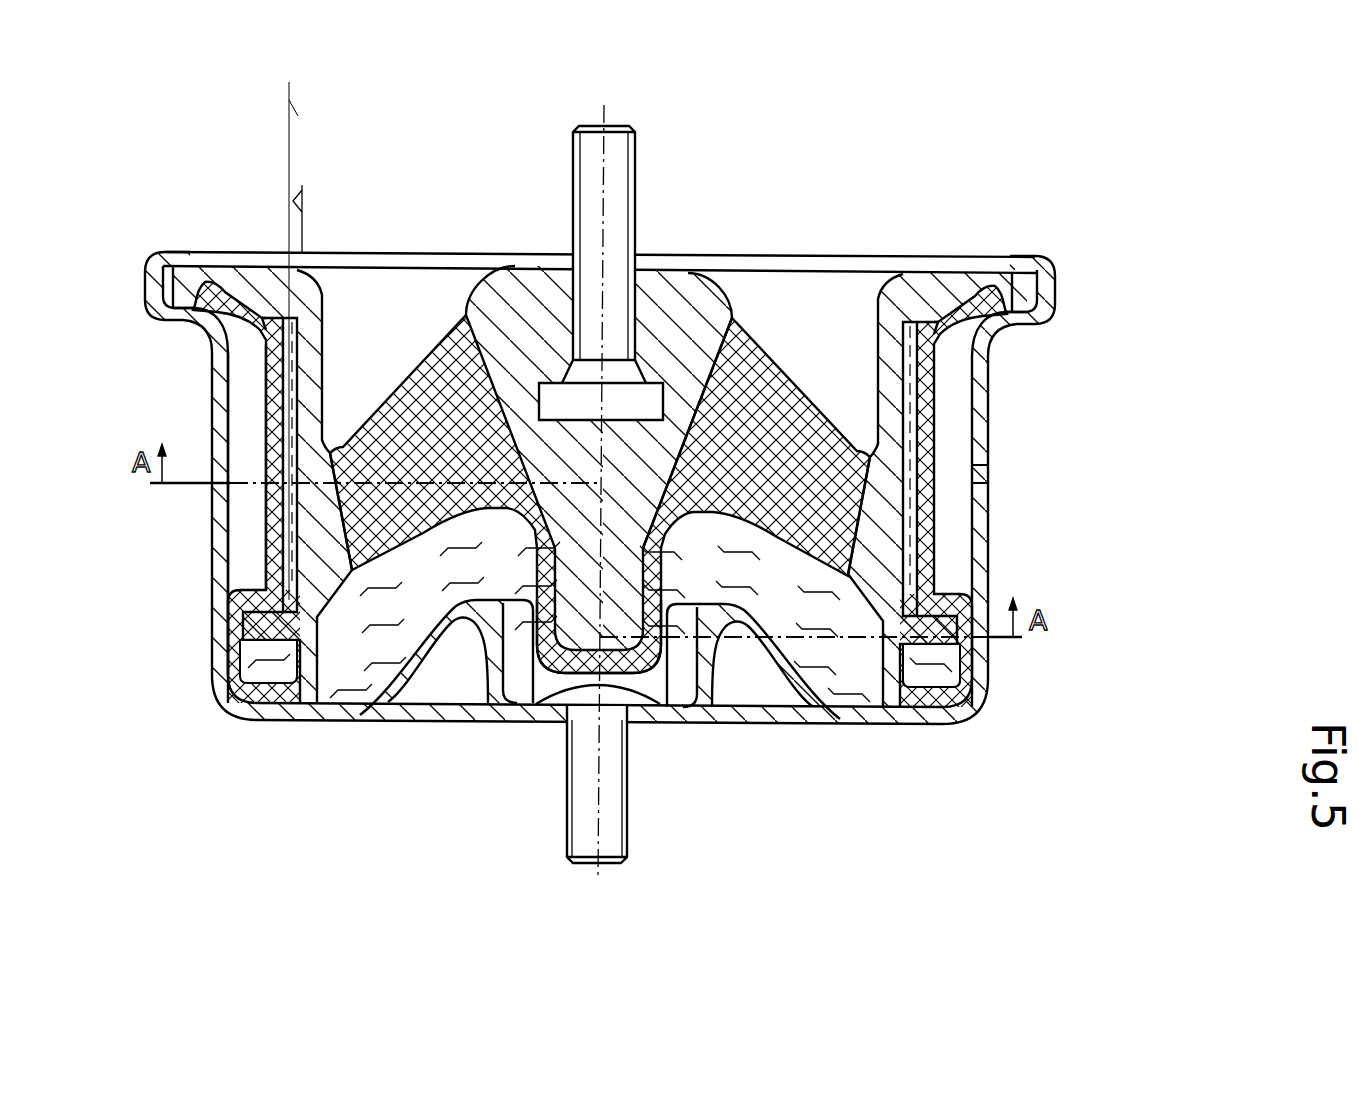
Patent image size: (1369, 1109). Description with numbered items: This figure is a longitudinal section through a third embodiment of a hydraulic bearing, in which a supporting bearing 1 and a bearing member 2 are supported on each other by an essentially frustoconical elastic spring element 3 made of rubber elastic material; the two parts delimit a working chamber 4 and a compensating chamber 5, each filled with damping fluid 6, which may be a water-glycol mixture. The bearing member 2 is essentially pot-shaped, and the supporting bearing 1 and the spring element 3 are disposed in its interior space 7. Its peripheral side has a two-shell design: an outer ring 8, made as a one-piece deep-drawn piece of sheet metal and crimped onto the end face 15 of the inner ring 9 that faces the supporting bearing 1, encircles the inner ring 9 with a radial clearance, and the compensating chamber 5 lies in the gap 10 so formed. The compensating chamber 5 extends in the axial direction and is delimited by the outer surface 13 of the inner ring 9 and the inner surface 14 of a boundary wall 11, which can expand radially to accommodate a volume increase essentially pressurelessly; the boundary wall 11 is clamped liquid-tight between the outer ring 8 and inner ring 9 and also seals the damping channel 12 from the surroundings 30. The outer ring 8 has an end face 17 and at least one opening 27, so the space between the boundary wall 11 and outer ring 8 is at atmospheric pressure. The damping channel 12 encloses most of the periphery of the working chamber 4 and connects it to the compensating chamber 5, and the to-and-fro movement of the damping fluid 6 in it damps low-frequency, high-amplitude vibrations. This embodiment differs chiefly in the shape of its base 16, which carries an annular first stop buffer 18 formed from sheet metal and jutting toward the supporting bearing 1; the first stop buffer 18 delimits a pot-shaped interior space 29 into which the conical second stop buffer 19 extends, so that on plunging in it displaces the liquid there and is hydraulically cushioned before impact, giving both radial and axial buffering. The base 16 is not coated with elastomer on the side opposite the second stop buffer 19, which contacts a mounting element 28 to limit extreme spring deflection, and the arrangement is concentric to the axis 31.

The supporting bearing 1 is at (650, 313).
The bearing member 2 is at (290, 713).
The elastic spring element 3 is at (772, 358).
The working chamber 4 is at (827, 621).
The compensating chamber 5 is at (912, 553).
The damping fluid 6 is at (387, 623).
The interior space 7 is at (855, 418).
The outer ring 8 is at (223, 448).
The inner ring 9 is at (322, 360).
The gap 10 is at (247, 548).
The boundary wall 11 is at (273, 437).
The damping channel 12 is at (945, 680).
The outer surface 13 is at (302, 185).
The inner surface 14 is at (289, 100).
The end face 15 is at (907, 275).
The base 16 is at (697, 723).
The end face 17 is at (917, 727).
The first stop buffer 18 is at (470, 613).
The second stop buffer 19 is at (632, 683).
The opening 27 is at (990, 475).
The mounting element 28 is at (585, 828).
The interior space 29 is at (523, 627).
The surroundings 30 is at (1140, 535).
The axis 31 is at (609, 105).